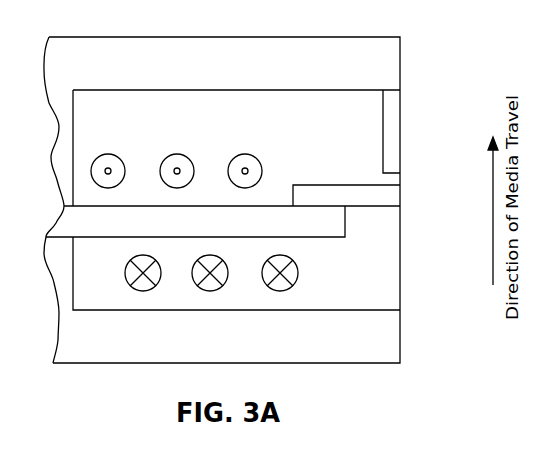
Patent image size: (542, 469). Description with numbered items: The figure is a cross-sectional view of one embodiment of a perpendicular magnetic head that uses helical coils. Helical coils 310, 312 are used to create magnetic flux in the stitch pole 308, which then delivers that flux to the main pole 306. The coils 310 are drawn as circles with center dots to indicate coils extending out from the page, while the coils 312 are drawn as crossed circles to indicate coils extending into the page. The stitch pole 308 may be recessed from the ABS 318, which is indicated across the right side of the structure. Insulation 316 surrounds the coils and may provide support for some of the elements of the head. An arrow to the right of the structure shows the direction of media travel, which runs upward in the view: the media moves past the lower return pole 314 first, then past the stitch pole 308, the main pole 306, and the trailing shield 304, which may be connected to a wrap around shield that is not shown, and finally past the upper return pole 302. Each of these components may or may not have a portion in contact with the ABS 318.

The upper return pole 302 is at (236, 72).
The trailing shield 304 is at (400, 135).
The main pole 306 is at (400, 190).
The stitch pole 308 is at (223, 221).
The helical coils 310 is at (105, 154).
The helical coils 312 is at (125, 280).
The lower return pole 314 is at (234, 339).
The insulation 316 is at (236, 200).
The ABS 318 is at (400, 57).